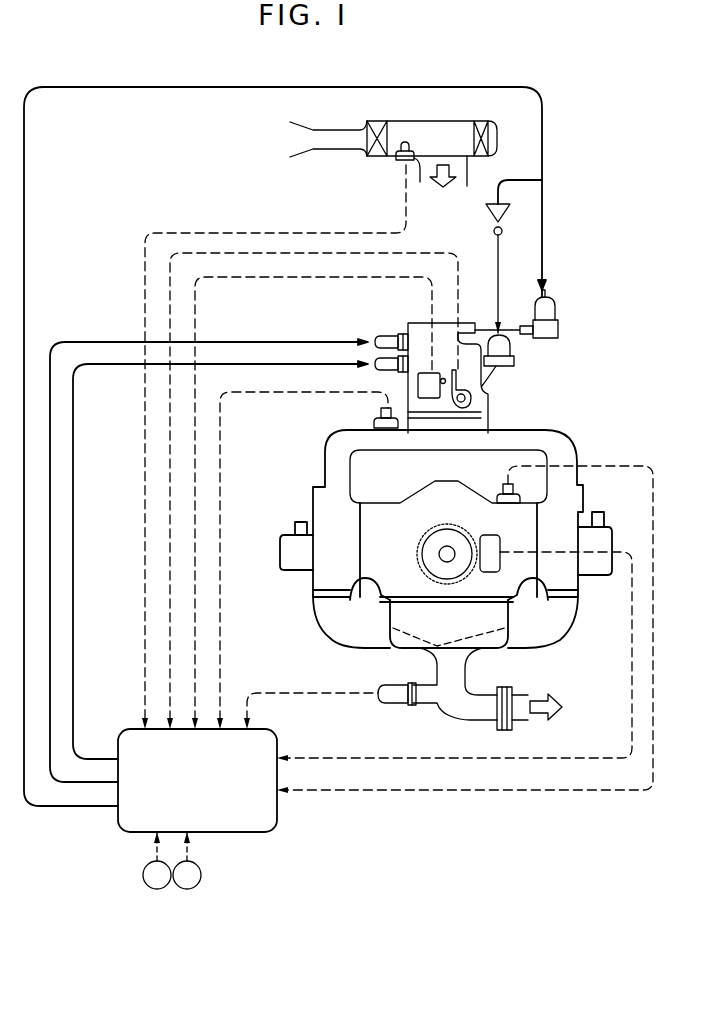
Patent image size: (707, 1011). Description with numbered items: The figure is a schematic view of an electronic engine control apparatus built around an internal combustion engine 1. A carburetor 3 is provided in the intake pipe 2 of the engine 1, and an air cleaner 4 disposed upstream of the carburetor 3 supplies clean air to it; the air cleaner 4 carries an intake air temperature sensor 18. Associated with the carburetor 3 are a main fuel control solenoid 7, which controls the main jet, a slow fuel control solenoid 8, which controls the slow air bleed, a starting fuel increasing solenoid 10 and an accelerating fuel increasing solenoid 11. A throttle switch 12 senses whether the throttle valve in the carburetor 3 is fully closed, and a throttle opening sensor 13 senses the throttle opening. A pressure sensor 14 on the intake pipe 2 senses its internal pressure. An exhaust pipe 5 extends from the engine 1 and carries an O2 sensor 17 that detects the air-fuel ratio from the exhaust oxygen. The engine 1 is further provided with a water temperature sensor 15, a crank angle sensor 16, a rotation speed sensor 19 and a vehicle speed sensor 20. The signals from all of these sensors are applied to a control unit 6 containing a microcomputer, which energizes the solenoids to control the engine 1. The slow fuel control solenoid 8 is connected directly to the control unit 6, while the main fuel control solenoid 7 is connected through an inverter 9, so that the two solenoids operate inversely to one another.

The internal combustion engine 1 is at (313, 507).
The intake pipe 2 is at (326, 462).
The carburetor 3 is at (489, 388).
The air cleaner 4 is at (416, 106).
The exhaust pipe 5 is at (448, 709).
The control unit 6 is at (238, 833).
The main fuel control solenoid 7 is at (516, 362).
The slow fuel control solenoid 8 is at (560, 301).
The inverter 9 is at (503, 229).
The starting fuel increasing solenoid 10 is at (372, 357).
The accelerating fuel increasing solenoid 11 is at (385, 334).
The throttle switch 12 is at (423, 372).
The throttle opening sensor 13 is at (478, 405).
The pressure sensor 14 is at (372, 421).
The water temperature sensor 15 is at (505, 491).
The crank angle sensor 16 is at (499, 568).
The O2 sensor 17 is at (390, 706).
The intake air temperature sensor 18 is at (398, 160).
The rotation speed sensor 19 is at (153, 890).
The vehicle speed sensor 20 is at (191, 890).